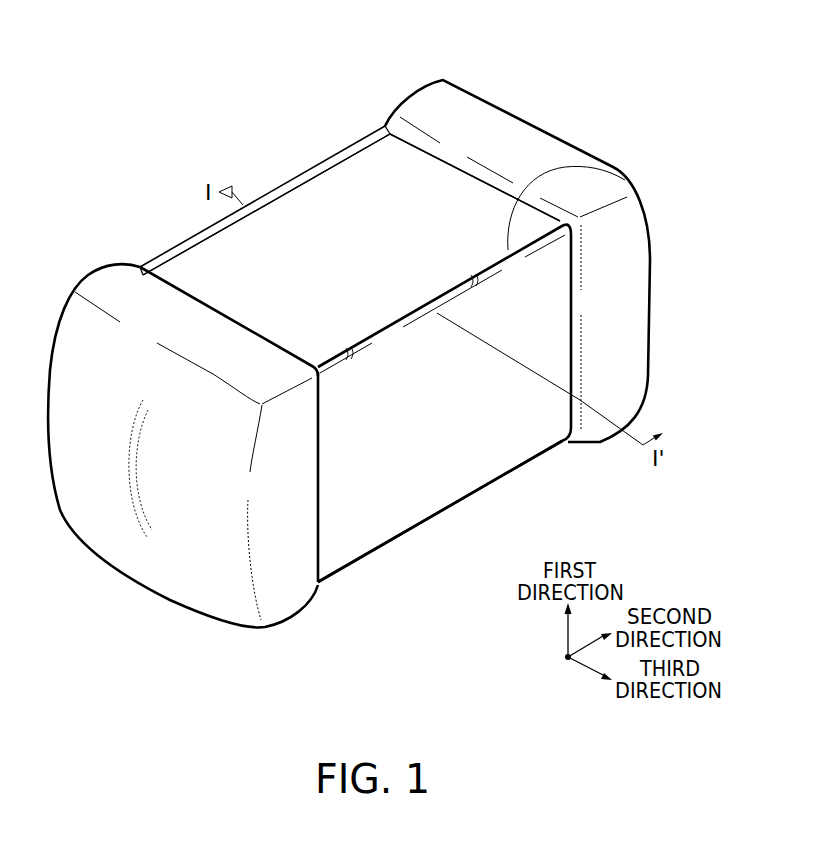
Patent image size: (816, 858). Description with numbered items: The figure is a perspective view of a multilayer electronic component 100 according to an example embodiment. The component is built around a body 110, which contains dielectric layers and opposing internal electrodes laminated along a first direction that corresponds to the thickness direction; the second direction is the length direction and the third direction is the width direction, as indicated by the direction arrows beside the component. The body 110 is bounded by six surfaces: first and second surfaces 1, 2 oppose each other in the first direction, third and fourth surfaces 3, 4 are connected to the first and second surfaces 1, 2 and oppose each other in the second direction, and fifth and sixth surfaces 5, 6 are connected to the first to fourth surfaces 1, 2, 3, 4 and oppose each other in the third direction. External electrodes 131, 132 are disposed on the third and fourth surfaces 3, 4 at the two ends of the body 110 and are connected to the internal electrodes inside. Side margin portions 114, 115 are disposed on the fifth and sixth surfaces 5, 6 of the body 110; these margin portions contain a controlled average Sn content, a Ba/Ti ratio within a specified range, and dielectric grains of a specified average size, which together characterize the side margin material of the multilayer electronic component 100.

The multilayer electronic component 100 is at (112, 24).
The body 110 is at (325, 202).
The first surface 1 is at (409, 538).
The second surface 2 is at (362, 172).
The third surface 3 is at (108, 530).
The fourth surface 4 is at (512, 127).
The fifth surface 5 is at (182, 236).
The sixth surface 6 is at (472, 468).
The side margin portion 114 is at (273, 192).
The side margin portion 115 is at (615, 170).
The external electrode 131 is at (183, 418).
The external electrode 132 is at (517, 232).